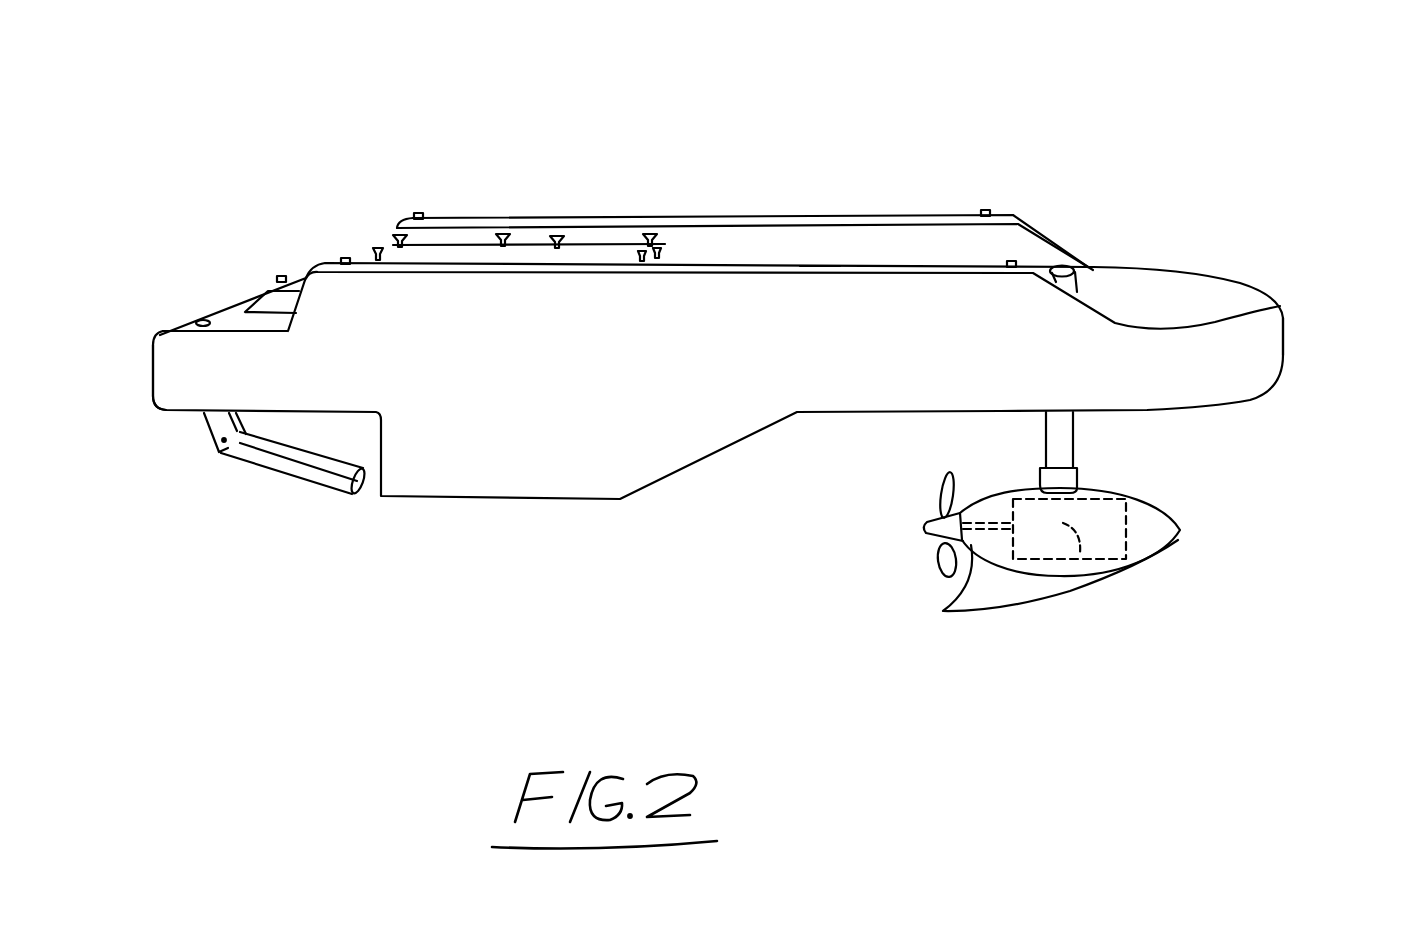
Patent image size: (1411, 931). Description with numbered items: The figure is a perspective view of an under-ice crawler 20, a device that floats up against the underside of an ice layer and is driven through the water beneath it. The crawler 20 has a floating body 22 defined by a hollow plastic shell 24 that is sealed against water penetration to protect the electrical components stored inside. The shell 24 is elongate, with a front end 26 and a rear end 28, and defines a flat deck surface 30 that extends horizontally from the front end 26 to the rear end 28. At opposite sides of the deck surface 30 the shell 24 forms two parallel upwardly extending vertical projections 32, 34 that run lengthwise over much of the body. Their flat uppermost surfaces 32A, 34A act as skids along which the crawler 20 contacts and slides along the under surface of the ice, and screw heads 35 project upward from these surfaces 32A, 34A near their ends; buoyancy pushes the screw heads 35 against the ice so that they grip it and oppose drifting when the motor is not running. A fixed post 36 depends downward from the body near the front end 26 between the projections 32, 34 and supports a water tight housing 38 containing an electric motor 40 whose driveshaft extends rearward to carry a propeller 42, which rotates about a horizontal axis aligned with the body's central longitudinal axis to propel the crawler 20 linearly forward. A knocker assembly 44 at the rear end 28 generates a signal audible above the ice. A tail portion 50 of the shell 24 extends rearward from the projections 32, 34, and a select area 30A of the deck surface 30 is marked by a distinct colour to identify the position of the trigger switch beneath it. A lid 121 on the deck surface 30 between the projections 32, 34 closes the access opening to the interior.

The under-ice crawler 20 is at (934, 104).
The floating body 22 is at (1178, 241).
The hollow plastic body or shell 24 is at (1215, 271).
The front end 26 is at (1287, 340).
The rear end 28 is at (148, 370).
The deck surface 30 is at (1122, 296).
The select area of the deck surface 30A is at (273, 303).
The vertical projection 32 is at (733, 247).
The flat horizontal uppermost surface 32A is at (676, 225).
The vertical projection 34 is at (855, 295).
The flat horizontal uppermost surface 34A is at (820, 268).
The screw heads 35 is at (342, 258).
The fixed post 36 is at (1068, 434).
The water tight housing 38 is at (1177, 517).
The electric motor 40 is at (1076, 577).
The propeller 42 is at (938, 505).
The knocker assembly 44 is at (243, 492).
The tail portion 50 is at (219, 375).
The lid 121 is at (585, 248).